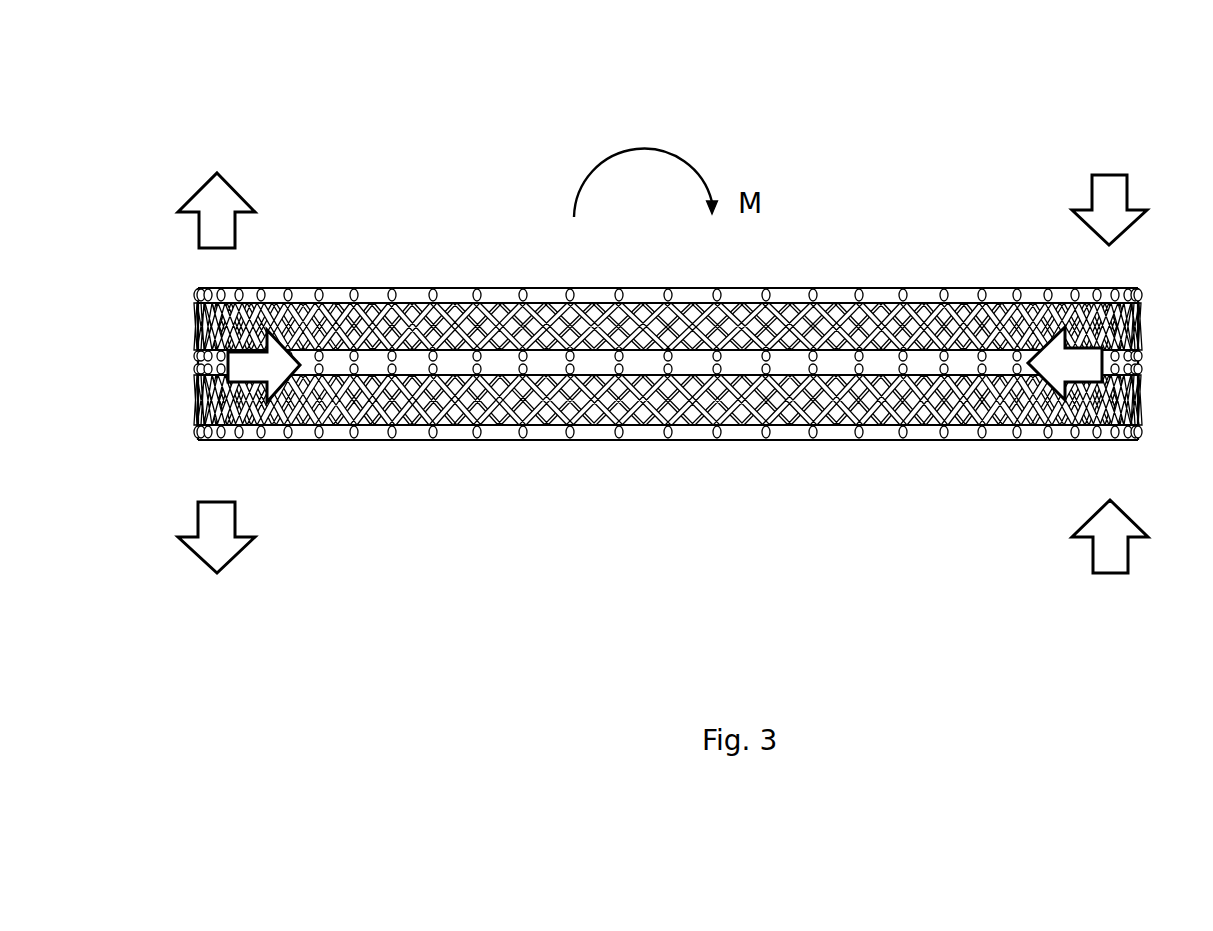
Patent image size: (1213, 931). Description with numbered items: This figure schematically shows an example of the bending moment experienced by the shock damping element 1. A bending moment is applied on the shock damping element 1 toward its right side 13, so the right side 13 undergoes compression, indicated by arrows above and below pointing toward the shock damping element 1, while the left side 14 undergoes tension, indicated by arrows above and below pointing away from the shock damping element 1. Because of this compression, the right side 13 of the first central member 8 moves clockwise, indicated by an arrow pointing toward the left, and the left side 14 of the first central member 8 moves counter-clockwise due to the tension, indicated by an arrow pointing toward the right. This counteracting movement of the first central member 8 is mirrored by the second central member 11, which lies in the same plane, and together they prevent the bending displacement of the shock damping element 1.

The shock damping element 1 is at (668, 349).
The first central member 8 is at (420, 380).
The second central member 11 is at (590, 376).
The right side 13 is at (1165, 158).
The left side 14 is at (181, 158).